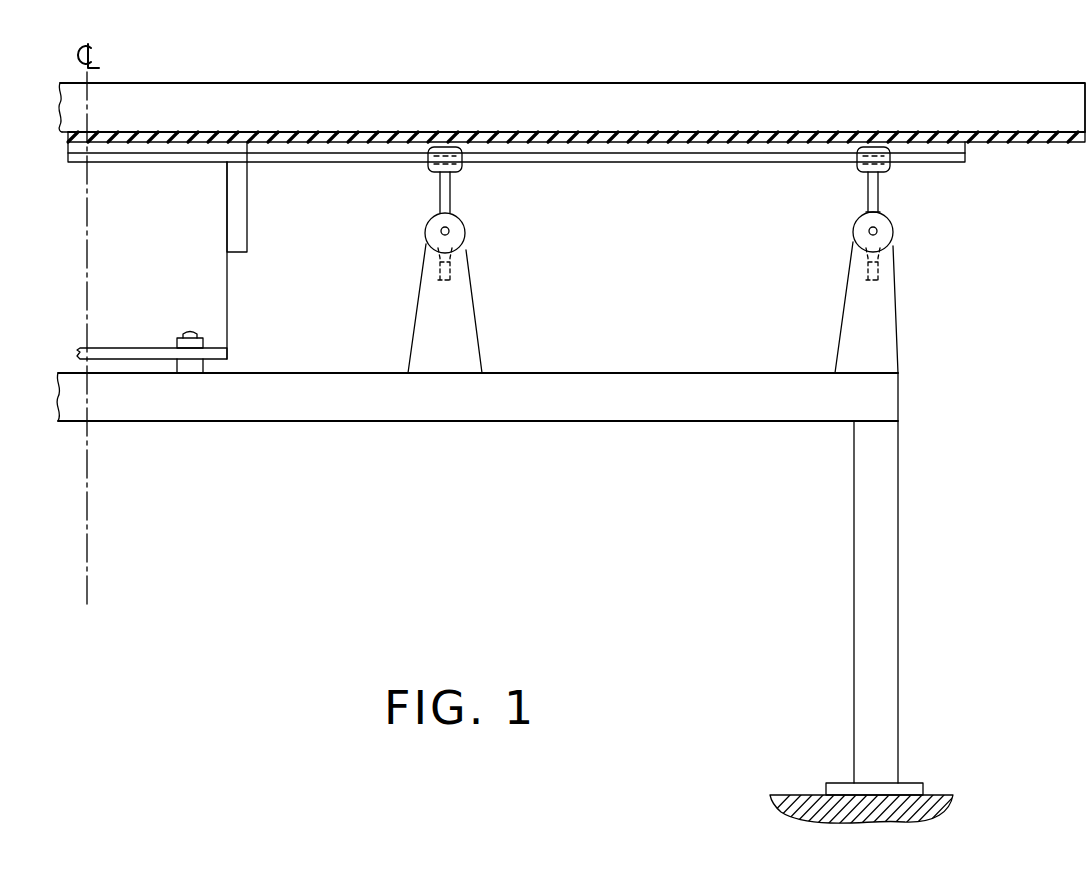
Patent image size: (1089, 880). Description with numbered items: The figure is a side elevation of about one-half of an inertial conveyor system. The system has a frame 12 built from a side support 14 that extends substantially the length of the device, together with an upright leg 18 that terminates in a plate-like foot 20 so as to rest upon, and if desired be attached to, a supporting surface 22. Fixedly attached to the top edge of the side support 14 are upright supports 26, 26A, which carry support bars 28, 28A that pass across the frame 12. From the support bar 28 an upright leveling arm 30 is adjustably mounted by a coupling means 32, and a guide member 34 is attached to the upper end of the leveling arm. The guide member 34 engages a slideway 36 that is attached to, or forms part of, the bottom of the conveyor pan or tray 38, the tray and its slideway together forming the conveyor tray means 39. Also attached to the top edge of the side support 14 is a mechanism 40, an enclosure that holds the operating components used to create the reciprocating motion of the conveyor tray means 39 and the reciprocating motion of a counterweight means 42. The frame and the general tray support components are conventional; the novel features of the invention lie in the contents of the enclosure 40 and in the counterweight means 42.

The frame 12 is at (525, 423).
The side support 14 is at (298, 417).
The upright leg 18 is at (854, 503).
The plate-like foot 20 is at (843, 783).
The surface 22 is at (790, 797).
The upright support 26 is at (900, 313).
The upright support 26A is at (478, 312).
The support bar 28 is at (877, 235).
The support bar 28A is at (450, 230).
The leveling arm 30 is at (868, 202).
The coupling means 32 is at (860, 212).
The guide member 34 is at (858, 173).
The slideway 36 is at (722, 160).
The conveyor tray 38 is at (340, 83).
The conveyor tray means 39 is at (1037, 144).
The mechanism 40 is at (229, 318).
The counterweight means 42 is at (249, 188).